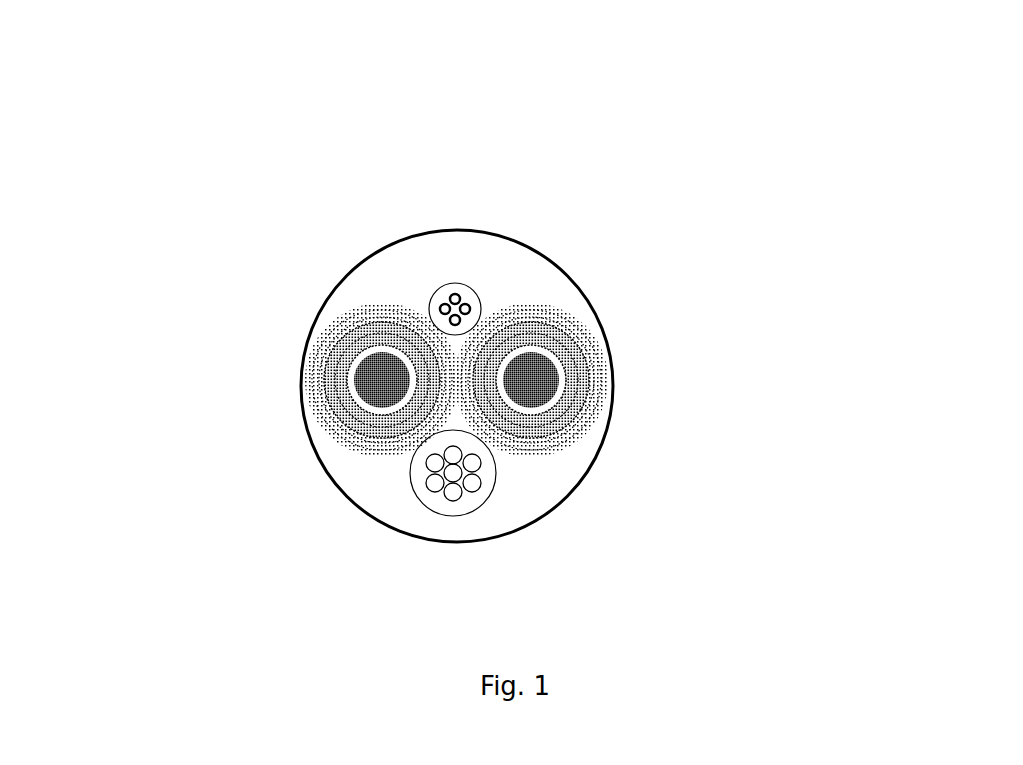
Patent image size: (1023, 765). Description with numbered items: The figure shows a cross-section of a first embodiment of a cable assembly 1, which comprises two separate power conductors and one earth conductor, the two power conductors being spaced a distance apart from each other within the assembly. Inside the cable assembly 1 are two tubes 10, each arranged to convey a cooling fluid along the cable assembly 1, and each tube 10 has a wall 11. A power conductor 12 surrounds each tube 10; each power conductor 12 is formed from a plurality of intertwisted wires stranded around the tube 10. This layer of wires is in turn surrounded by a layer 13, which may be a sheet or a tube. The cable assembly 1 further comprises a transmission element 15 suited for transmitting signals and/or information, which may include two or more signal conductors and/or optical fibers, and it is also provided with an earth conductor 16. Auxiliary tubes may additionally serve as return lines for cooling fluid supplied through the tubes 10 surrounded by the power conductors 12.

The cable assembly 1 is at (830, 276).
The tube 10 is at (357, 420).
The wall 11 is at (352, 367).
The power conductor 12 is at (356, 336).
The layer 13 is at (313, 392).
The transmission element 15 is at (458, 294).
The earth conductor 16 is at (455, 470).